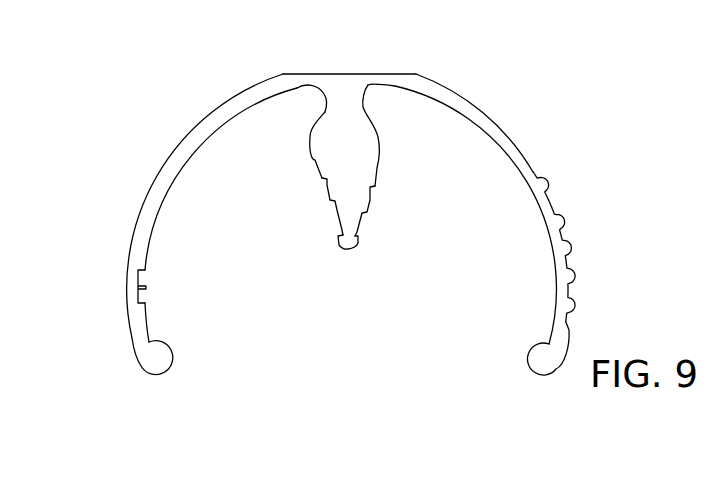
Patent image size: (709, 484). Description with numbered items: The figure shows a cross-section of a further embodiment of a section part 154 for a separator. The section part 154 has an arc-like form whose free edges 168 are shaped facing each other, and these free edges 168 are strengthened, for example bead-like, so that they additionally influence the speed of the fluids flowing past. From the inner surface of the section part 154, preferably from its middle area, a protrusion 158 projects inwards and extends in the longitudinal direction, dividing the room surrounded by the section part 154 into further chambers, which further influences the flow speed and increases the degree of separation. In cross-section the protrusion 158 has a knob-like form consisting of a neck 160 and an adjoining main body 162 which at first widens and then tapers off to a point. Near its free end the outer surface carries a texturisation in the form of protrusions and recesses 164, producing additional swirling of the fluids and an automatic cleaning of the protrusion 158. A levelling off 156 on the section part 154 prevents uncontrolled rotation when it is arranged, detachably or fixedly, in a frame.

The section part 154 is at (504, 121).
The levelling off 156 is at (360, 73).
The protrusion 158 is at (347, 250).
The neck 160 is at (303, 92).
The main body 162 is at (308, 148).
The protrusions and recesses 164 is at (333, 216).
The free edges 168 is at (530, 360).